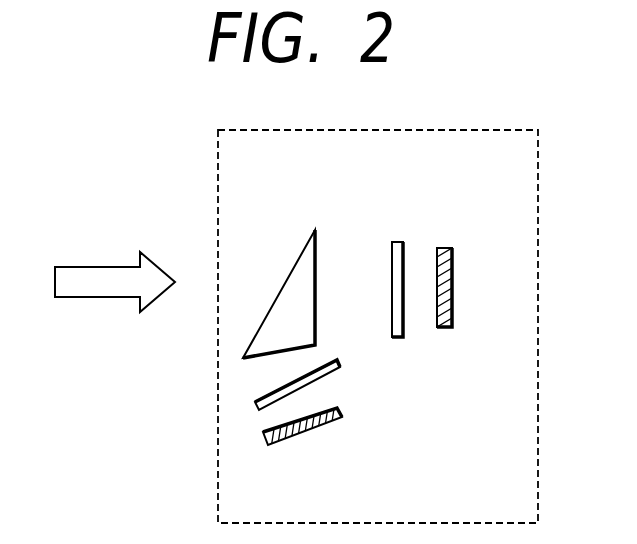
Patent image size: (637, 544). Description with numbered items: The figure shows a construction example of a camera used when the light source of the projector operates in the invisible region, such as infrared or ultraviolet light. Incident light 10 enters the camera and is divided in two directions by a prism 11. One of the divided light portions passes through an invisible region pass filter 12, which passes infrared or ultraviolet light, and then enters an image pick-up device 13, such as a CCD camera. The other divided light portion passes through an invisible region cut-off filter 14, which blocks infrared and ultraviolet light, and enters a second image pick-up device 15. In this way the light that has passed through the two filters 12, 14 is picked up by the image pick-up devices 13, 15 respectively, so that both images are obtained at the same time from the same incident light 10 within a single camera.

The incident light 10 is at (112, 267).
The prism 11 is at (288, 273).
The invisible region pass filter 12 is at (340, 362).
The image pick-up device 13 is at (342, 411).
The invisible region cut-off filter 14 is at (397, 240).
The image pick-up device 15 is at (445, 246).